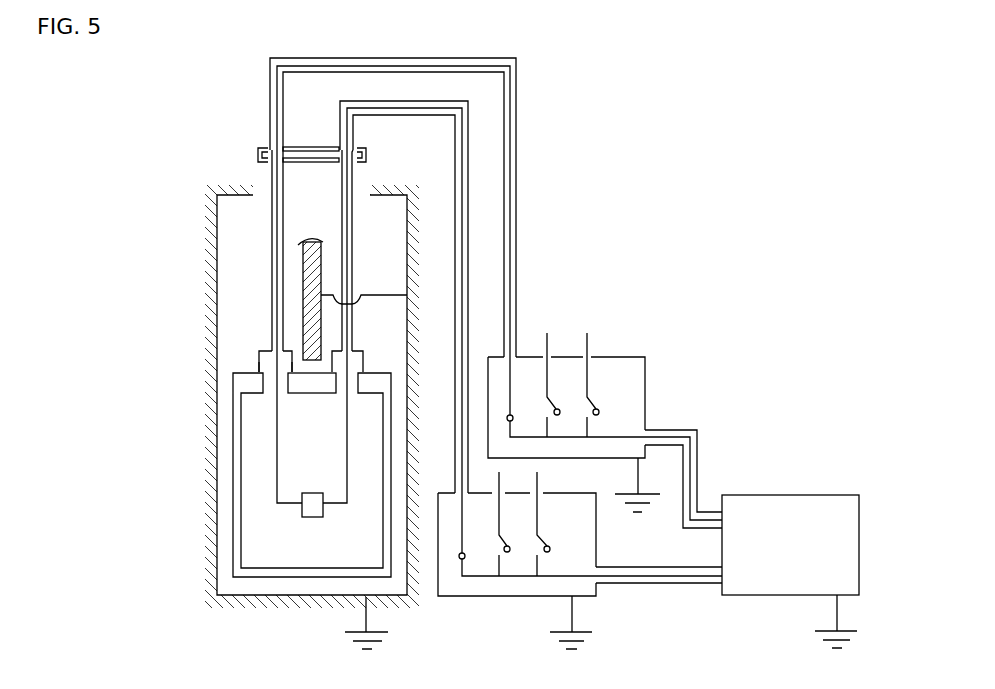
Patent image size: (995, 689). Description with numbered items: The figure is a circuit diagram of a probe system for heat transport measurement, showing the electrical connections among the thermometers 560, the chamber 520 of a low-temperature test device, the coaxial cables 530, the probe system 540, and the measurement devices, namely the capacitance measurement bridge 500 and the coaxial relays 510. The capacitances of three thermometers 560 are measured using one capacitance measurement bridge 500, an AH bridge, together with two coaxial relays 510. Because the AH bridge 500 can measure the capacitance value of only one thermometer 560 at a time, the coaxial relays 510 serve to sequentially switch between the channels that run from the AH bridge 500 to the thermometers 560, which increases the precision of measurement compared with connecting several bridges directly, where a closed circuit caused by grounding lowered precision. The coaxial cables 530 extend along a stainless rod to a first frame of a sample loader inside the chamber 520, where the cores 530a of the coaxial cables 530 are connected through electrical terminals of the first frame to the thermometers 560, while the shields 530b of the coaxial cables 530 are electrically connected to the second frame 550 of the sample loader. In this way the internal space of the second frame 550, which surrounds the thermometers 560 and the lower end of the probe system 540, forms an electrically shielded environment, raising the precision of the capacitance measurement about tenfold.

The capacitance measurement bridge 500 is at (808, 495).
The coaxial relay 510 is at (577, 493).
The chamber 520 is at (217, 240).
The coaxial cable 530 is at (271, 176).
The core 530a is at (259, 366).
The shield 530b is at (259, 358).
The probe system 540 is at (303, 279).
The second frame 550 is at (233, 425).
The thermometer 560 is at (302, 514).